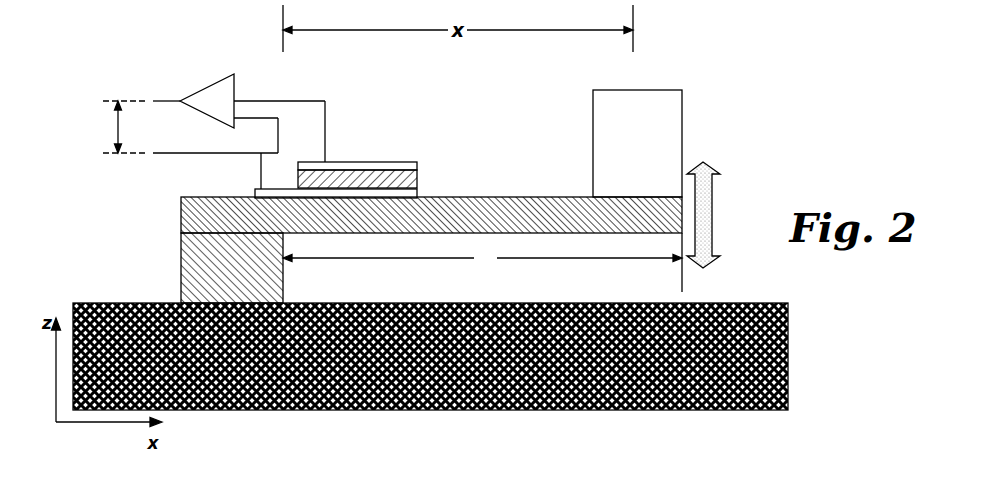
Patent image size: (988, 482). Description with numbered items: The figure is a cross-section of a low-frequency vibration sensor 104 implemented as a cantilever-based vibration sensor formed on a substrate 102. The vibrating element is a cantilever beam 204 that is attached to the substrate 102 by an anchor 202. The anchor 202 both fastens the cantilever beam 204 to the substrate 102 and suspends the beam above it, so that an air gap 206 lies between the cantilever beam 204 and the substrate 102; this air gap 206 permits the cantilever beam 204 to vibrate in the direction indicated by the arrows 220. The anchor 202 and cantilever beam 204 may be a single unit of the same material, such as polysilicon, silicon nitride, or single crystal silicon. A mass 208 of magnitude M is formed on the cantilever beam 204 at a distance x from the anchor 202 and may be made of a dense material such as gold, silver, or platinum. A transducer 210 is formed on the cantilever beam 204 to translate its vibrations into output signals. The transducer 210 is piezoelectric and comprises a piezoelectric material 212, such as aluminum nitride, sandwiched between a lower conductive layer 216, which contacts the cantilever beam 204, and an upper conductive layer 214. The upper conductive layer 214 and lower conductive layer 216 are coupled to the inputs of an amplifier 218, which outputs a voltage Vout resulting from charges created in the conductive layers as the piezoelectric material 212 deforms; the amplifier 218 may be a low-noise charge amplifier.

The substrate 102 is at (788, 362).
The low-frequency vibration sensor 104 is at (757, 92).
The anchor 202 is at (232, 268).
The cantilever beam 204 is at (431, 215).
The air gap 206 is at (482, 263).
The mass 208 is at (637, 143).
The transducer 210 is at (349, 156).
The piezoelectric material 212 is at (413, 170).
The upper conductive layer 214 is at (371, 162).
The lower conductive layer 216 is at (417, 197).
The amplifier 218 is at (208, 86).
The arrows 220 is at (703, 215).